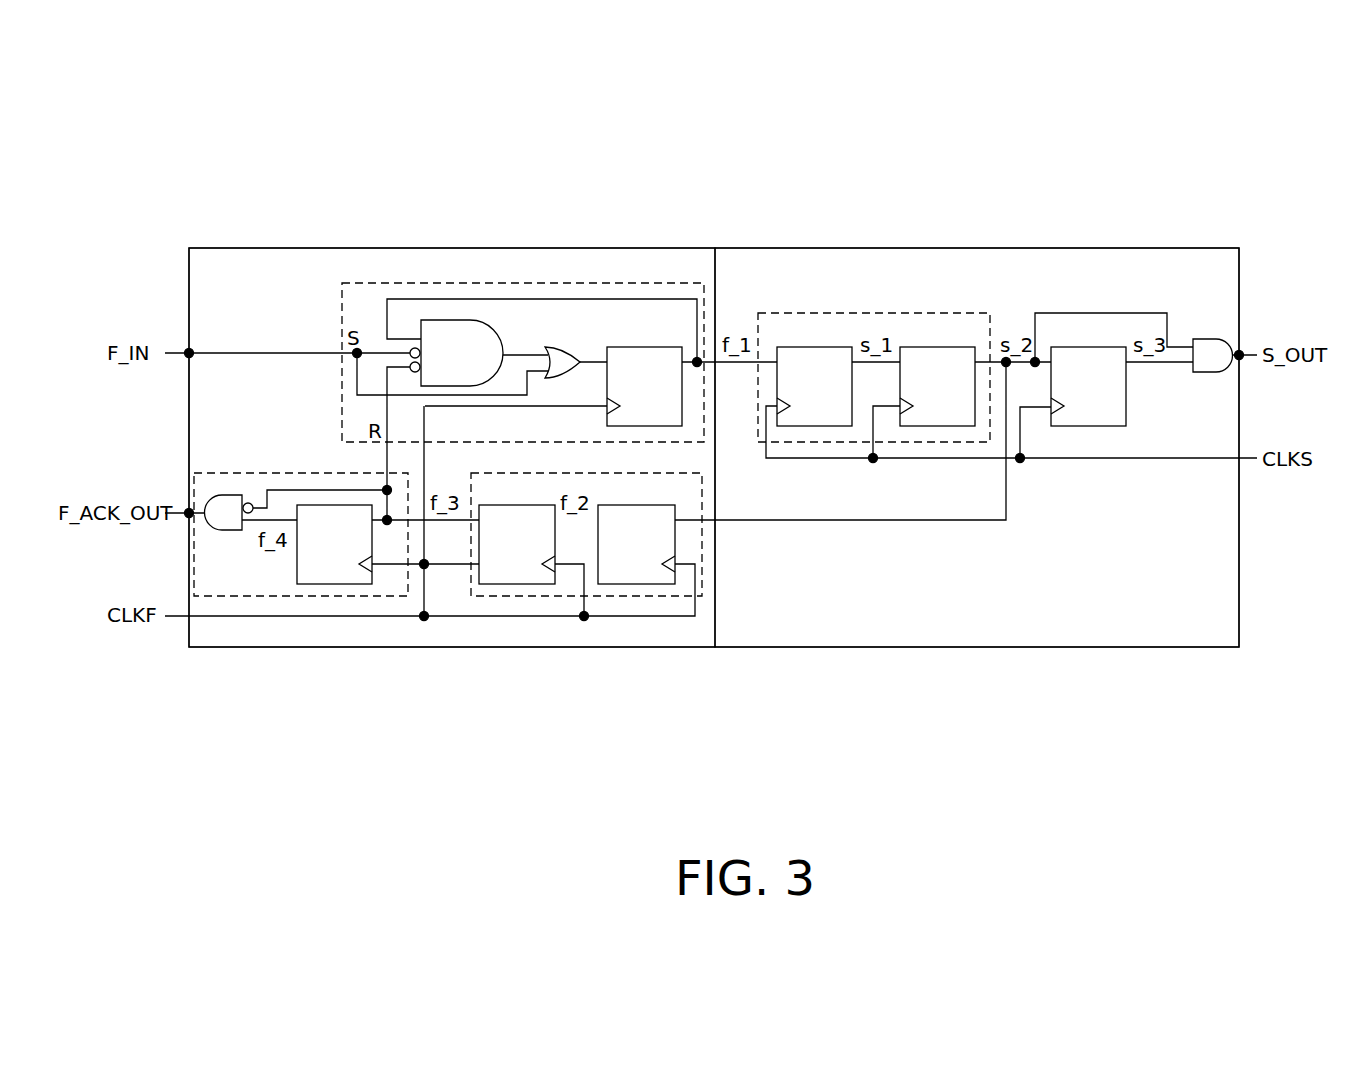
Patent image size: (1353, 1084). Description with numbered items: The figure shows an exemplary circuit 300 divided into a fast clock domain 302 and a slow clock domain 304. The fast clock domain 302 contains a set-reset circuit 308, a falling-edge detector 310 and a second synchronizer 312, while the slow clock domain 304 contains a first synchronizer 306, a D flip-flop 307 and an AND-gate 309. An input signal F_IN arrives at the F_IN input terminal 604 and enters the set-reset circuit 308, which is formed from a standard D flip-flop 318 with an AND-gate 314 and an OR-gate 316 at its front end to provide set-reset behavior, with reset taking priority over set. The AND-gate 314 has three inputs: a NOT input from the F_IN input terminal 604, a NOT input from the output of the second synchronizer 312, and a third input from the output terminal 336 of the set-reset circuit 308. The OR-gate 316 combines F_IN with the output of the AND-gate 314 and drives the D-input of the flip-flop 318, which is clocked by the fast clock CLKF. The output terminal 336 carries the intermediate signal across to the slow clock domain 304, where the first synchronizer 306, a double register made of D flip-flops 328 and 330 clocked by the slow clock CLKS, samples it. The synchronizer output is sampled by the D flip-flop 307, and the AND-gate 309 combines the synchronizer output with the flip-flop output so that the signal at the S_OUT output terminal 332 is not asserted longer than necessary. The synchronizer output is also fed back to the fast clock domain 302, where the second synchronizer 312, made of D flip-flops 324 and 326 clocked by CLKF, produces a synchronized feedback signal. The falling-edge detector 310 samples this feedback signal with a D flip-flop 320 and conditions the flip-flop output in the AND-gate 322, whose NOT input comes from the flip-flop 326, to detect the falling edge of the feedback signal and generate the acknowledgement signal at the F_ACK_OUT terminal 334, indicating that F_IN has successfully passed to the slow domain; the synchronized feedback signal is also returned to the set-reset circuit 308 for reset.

The circuit 300 is at (1310, 173).
The fast clock domain 302 is at (492, 247).
The slow clock domain 304 is at (885, 247).
The first synchronizer 306 is at (965, 313).
The D flip-flop 307 is at (1126, 406).
The set-reset circuit 308 is at (643, 283).
The AND-gate 309 is at (1215, 339).
The falling-edge detector 310 is at (243, 597).
The second synchronizer 312 is at (525, 597).
The AND-gate 314 is at (492, 326).
The OR-gate 316 is at (562, 347).
The D flip-flop 318 is at (627, 347).
The D flip-flop 320 is at (348, 584).
The AND-gate 322 is at (216, 502).
The D flip-flop 324 is at (650, 575).
The D flip-flop 326 is at (510, 505).
The D flip-flop 328 is at (813, 421).
The D flip-flop 330 is at (938, 419).
The output terminal S_OUT 332 is at (1240, 358).
The acknowledgement terminal F_ACK_OUT 334 is at (189, 515).
The output terminal 336 is at (699, 358).
The F_IN input terminal 604 is at (189, 351).